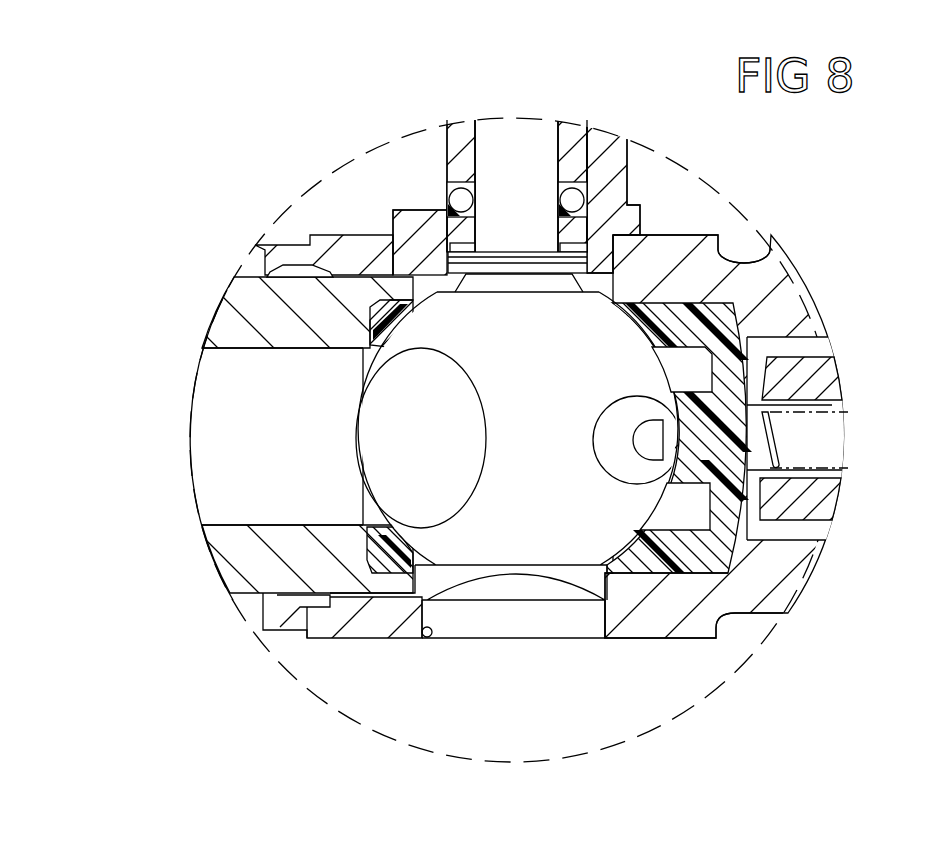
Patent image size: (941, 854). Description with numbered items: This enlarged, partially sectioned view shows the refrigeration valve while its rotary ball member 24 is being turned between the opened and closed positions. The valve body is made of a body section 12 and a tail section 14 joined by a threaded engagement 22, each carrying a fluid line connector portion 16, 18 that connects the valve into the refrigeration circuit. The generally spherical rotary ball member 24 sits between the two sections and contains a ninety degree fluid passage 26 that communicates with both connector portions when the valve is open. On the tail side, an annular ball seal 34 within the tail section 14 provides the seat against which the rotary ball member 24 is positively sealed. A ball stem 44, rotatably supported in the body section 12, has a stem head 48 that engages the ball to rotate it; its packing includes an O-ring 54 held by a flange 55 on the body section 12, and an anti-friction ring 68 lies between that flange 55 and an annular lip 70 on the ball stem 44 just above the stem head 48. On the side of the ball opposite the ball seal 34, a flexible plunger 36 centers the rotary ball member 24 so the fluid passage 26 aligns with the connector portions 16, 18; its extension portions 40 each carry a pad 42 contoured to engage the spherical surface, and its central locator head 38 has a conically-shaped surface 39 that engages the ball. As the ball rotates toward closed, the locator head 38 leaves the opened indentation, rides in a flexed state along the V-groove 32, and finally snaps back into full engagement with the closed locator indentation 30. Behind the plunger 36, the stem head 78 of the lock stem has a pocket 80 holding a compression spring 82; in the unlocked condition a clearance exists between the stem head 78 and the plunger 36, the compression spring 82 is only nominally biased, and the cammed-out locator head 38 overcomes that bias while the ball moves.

The body section 12 is at (645, 625).
The tail section 14 is at (245, 297).
The fluid line connector portion 16 is at (422, 637).
The fluid line connector portion 18 is at (247, 350).
The threaded engagement 22 is at (300, 267).
The rotary ball member 24 is at (375, 345).
The fluid passage 26 is at (504, 436).
The closed locator indentation 30 is at (607, 452).
The V-groove 32 is at (660, 423).
The ball seal 34 is at (360, 530).
The plunger 36 is at (717, 297).
The locator head 38 is at (650, 357).
The conically-shaped surface 39 is at (667, 493).
The extension portions 40 is at (688, 560).
The pad 42 is at (735, 300).
The ball stem 44 is at (545, 143).
The stem head 48 is at (497, 282).
The O-ring 54 is at (461, 188).
The flange 55 is at (455, 225).
The anti-friction ring 68 is at (440, 245).
The annular lip 70 is at (655, 213).
The stem head 78 is at (788, 367).
The pocket 80 is at (820, 412).
The compression spring 82 is at (778, 448).